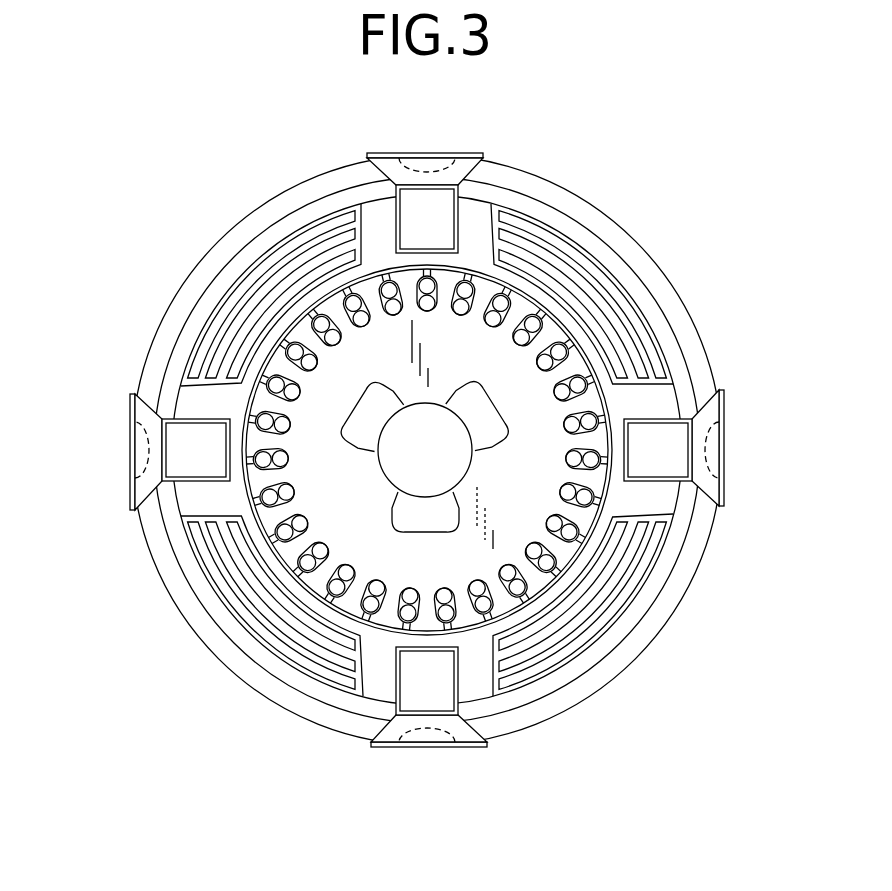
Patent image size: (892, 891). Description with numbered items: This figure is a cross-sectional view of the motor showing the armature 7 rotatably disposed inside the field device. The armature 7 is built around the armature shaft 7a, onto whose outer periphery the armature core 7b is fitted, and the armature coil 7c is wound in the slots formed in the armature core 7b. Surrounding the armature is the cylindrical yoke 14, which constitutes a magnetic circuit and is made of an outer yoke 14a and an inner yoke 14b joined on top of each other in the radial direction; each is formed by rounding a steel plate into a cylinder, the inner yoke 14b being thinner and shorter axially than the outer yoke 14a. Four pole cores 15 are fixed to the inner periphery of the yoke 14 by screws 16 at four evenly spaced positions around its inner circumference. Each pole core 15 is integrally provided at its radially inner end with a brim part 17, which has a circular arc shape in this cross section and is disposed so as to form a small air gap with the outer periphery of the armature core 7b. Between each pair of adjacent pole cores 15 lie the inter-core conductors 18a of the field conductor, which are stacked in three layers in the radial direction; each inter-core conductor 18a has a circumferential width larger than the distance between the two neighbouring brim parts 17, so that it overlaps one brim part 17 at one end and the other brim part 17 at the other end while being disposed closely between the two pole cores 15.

The armature 7 is at (572, 332).
The armature shaft 7a is at (408, 468).
The armature core 7b is at (518, 518).
The armature coil 7c is at (572, 535).
The yoke 14 is at (440, 446).
The outer yoke 14a is at (562, 196).
The inner yoke 14b is at (593, 244).
The pole core 15 is at (382, 212).
The screw 16 is at (437, 186).
The brim part 17 is at (328, 290).
The inter-core conductor 18a is at (273, 312).